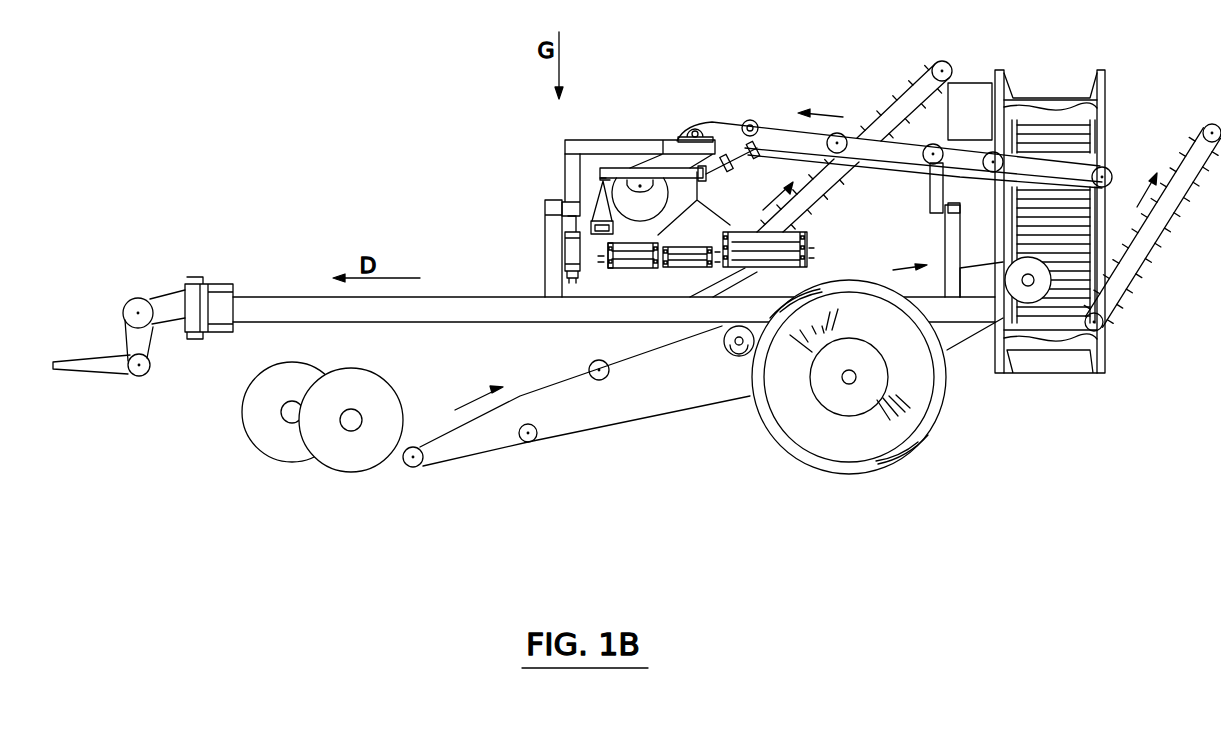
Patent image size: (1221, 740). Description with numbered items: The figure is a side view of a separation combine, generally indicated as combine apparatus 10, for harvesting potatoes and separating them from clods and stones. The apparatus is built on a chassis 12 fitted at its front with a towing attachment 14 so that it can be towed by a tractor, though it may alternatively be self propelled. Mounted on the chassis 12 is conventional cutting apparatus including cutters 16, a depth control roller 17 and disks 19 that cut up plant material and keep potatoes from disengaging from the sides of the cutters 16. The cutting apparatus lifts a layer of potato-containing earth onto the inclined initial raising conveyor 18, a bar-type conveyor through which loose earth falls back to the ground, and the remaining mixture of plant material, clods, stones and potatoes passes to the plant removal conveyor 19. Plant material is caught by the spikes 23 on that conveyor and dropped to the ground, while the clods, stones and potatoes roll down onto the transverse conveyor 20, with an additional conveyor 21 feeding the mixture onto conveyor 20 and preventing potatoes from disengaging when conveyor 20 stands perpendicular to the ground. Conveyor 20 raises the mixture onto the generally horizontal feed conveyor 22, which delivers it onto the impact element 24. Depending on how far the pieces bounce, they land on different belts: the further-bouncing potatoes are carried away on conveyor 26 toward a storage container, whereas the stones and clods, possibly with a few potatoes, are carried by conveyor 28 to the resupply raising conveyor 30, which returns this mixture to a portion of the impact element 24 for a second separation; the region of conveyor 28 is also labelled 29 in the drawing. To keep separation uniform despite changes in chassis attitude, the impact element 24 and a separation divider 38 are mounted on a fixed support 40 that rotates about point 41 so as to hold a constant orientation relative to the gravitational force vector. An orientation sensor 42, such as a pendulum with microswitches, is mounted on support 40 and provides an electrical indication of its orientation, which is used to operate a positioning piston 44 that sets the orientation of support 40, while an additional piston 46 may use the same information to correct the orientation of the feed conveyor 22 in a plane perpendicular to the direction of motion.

The combine apparatus 10 is at (468, 172).
The chassis 12 is at (520, 303).
The towing attachment 14 is at (137, 299).
The cutters 16 is at (405, 446).
The depth control roller 17 is at (252, 416).
The initial raising conveyor 18 is at (540, 382).
The plant removal conveyor / disks 19 is at (377, 396).
The transverse conveyor 20 is at (1052, 365).
The additional conveyor 21 is at (1038, 315).
The feed conveyor 22 is at (731, 121).
The spikes 23 is at (1173, 165).
The impact element 24 is at (630, 170).
The conveyor 26 is at (808, 240).
The conveyor 28 is at (678, 266).
The roller end 29 is at (633, 258).
The resupply raising conveyor 30 is at (886, 104).
The separation divider 38 is at (700, 200).
The fixed support 40 is at (613, 170).
The point 41 is at (697, 124).
The orientation sensor 42 is at (593, 216).
The positioning piston 44 is at (757, 144).
The additional piston 46 is at (568, 243).